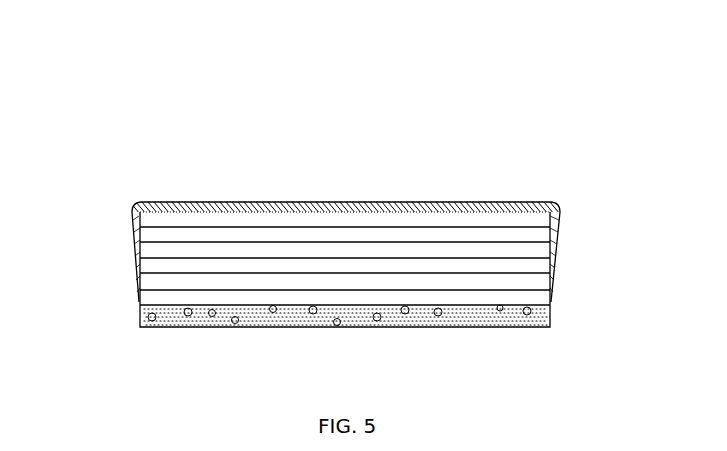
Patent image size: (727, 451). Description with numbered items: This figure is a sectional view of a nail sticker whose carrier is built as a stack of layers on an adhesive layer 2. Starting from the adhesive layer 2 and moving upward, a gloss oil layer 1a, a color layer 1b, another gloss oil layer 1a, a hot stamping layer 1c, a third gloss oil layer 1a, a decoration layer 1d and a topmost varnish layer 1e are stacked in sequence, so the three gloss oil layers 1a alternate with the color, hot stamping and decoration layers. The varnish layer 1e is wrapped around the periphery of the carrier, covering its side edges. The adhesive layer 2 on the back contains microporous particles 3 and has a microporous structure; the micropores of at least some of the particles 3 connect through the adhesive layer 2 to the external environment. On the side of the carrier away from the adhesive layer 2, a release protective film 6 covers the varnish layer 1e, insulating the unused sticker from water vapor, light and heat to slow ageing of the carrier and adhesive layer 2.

The varnish layer 1e is at (345, 181).
The gloss oil layer 1a is at (315, 202).
The color layer 1b is at (345, 194).
The hot stamping layer 1c is at (345, 178).
The decoration layer 1d is at (375, 163).
The adhesive layer 2 is at (345, 357).
The microporous particles 3 is at (339, 357).
The release protective film 6 is at (345, 305).